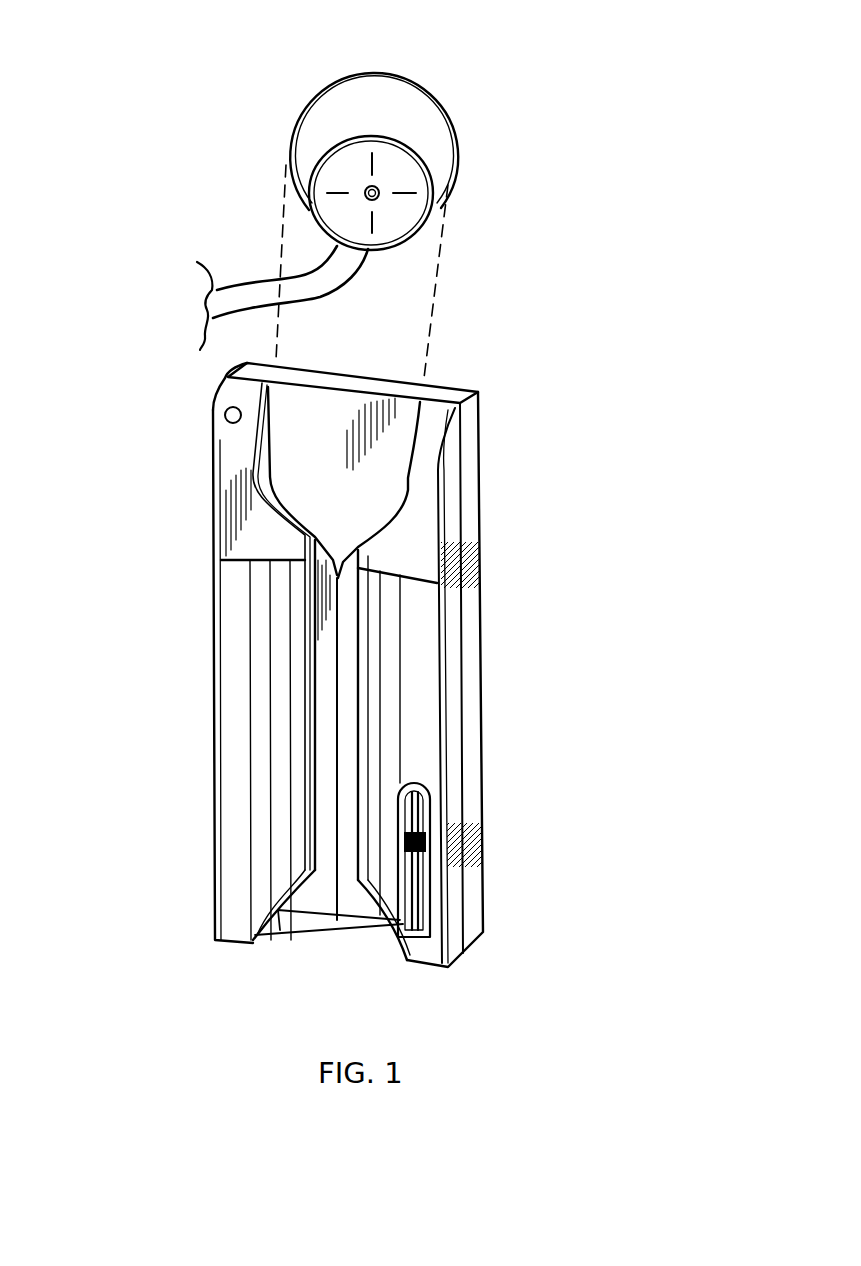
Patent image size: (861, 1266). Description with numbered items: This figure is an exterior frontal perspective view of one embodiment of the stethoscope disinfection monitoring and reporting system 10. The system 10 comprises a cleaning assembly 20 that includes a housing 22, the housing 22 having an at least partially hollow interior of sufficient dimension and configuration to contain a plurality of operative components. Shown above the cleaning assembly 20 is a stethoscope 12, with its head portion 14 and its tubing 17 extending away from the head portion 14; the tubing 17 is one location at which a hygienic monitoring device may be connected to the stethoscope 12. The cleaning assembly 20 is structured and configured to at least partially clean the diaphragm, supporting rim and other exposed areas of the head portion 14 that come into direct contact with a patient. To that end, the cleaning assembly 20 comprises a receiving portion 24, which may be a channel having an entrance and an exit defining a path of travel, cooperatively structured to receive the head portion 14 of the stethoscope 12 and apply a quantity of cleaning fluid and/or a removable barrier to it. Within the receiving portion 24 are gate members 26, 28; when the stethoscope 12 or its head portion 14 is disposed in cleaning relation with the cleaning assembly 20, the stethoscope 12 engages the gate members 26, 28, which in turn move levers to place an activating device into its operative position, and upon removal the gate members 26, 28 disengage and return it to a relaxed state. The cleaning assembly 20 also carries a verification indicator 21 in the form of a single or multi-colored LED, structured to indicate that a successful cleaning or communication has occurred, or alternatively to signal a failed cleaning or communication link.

The system 10 is at (630, 200).
The stethoscope 12 is at (298, 64).
The head portion 14 is at (430, 112).
The tubing 17 is at (238, 288).
The cleaning assembly 20 is at (570, 440).
The verification indicator 21 is at (232, 407).
The housing 22 is at (483, 560).
The receiving portion 24 is at (352, 406).
The gate member 26 is at (318, 527).
The gate member 28 is at (367, 533).